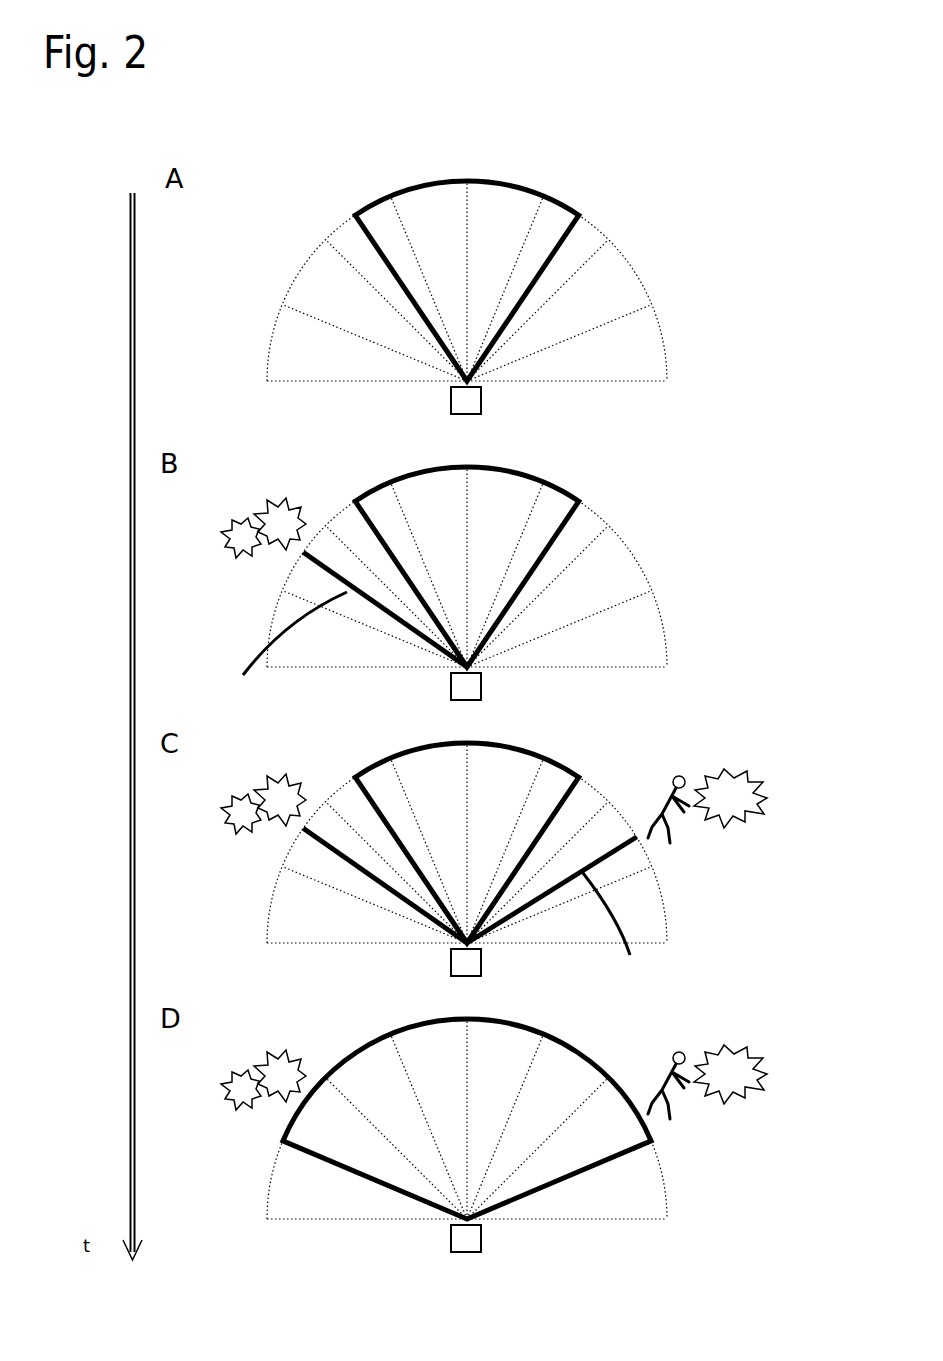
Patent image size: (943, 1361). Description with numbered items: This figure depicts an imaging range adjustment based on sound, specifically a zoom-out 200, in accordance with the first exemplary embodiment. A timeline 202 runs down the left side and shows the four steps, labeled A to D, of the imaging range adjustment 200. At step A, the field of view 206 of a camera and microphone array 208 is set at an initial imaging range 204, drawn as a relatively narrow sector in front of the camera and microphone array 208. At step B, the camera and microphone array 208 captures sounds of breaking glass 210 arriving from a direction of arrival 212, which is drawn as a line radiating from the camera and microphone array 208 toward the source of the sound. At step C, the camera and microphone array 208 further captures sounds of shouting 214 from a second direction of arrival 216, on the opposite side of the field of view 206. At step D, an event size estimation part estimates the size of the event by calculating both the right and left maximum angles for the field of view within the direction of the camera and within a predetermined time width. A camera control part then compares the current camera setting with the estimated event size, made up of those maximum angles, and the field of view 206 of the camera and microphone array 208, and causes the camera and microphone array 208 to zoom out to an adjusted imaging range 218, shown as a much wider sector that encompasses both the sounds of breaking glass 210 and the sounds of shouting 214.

The imaging range adjustment based on sound (zoom-out) 200 is at (758, 205).
The timeline 202 is at (130, 252).
The initial imaging range 204 is at (387, 182).
The field of view 206 is at (467, 281).
The camera and microphone array 208 is at (482, 401).
The sounds of breaking glass 210 is at (283, 499).
The direction of arrival 212 is at (341, 747).
The sounds of shouting 214 is at (735, 773).
The direction of arrival 216 is at (565, 916).
The adjusted imaging range 218 is at (385, 1020).